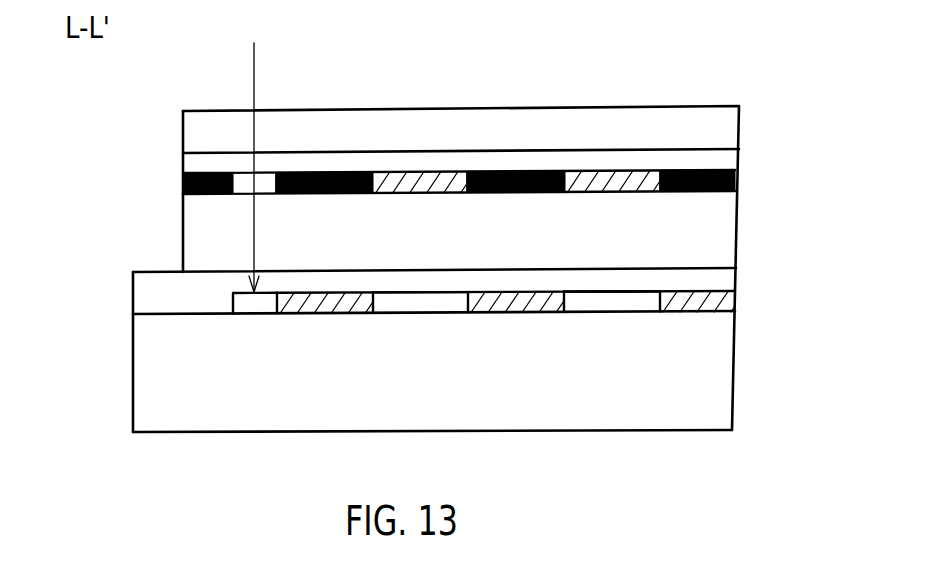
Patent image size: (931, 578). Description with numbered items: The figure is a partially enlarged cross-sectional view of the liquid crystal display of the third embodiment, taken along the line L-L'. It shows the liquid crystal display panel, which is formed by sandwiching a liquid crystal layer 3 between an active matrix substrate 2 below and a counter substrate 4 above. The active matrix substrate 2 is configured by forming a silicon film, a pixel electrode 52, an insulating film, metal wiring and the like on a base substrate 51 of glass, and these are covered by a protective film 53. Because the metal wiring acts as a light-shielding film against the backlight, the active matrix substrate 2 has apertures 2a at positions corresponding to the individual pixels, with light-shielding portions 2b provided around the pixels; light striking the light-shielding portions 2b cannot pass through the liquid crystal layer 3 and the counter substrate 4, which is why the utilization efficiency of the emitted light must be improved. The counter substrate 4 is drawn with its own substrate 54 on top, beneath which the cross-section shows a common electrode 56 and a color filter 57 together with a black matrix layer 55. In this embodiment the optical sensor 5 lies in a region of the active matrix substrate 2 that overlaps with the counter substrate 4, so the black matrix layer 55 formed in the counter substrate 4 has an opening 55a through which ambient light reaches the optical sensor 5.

The active matrix substrate 2 is at (125, 272).
The aperture 2a is at (375, 328).
The light-shielding portion 2b is at (278, 328).
The liquid crystal layer 3 is at (125, 198).
The counter substrate 4 is at (125, 112).
The optical sensor 5 is at (232, 302).
The glass substrate 51 is at (718, 363).
The pixel electrode 52 is at (619, 298).
The protective film 53 is at (723, 281).
The counter glass substrate 54 is at (718, 130).
The black matrix layer 55 is at (322, 172).
The opening 55a is at (236, 181).
The common electrode 56 is at (386, 162).
The color filter 57 is at (420, 180).